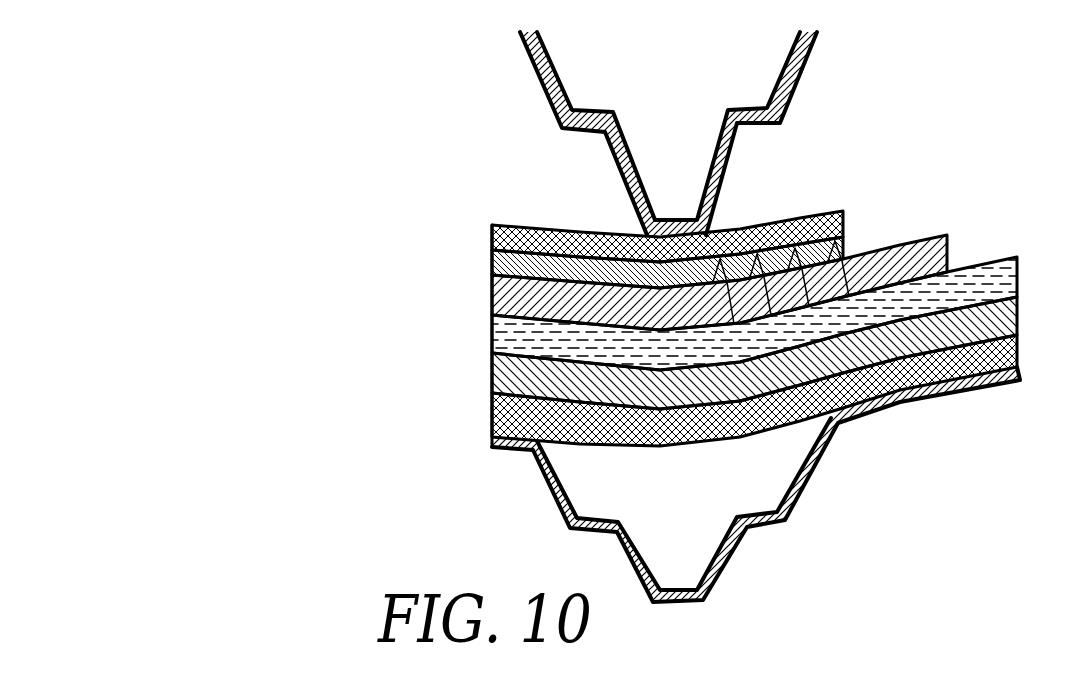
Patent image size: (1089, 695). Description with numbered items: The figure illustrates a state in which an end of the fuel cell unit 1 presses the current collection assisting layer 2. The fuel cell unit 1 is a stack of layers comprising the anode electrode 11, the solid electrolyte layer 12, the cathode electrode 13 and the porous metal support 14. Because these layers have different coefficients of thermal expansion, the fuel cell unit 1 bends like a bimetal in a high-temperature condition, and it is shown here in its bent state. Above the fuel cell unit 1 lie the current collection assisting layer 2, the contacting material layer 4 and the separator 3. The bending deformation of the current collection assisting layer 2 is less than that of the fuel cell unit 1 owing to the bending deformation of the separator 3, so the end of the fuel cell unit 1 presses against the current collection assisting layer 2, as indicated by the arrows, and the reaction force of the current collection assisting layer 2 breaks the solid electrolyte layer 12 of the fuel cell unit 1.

The fuel cell unit 1 is at (599, 377).
The current collection assisting layer 2 is at (828, 211).
The separator 3 is at (800, 73).
The contacting material layer 4 is at (845, 246).
The anode electrode 11 is at (490, 380).
The solid electrolyte layer 12 is at (490, 337).
The cathode electrode 13 is at (490, 298).
The porous metal support 14 is at (673, 432).